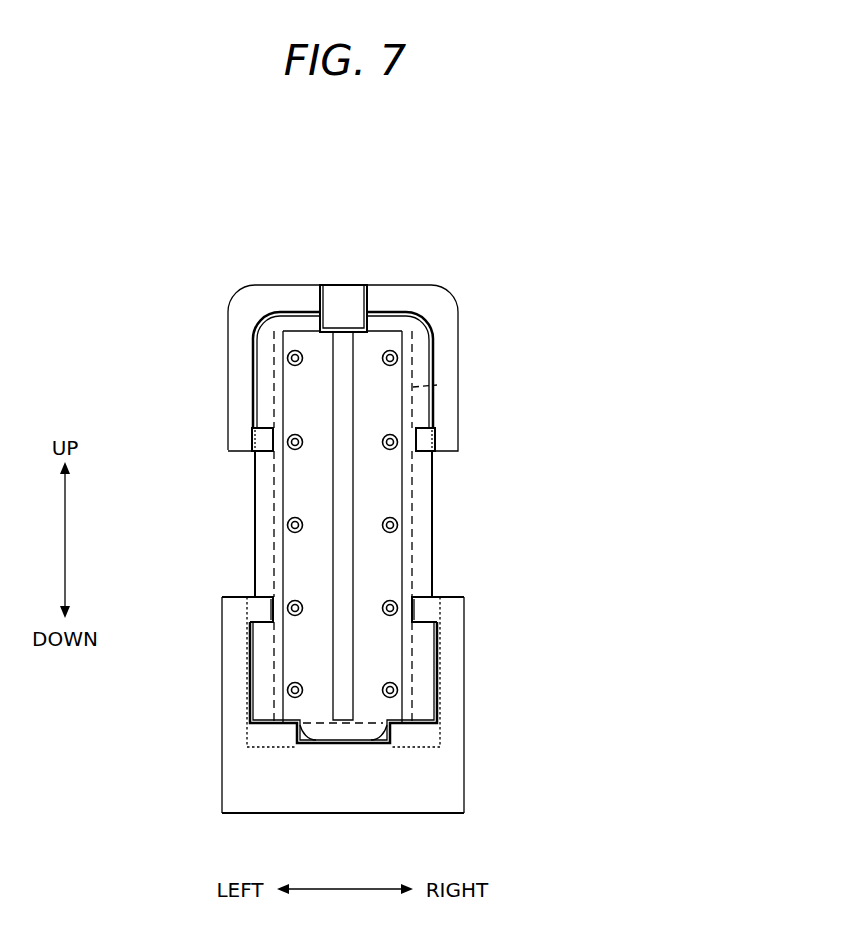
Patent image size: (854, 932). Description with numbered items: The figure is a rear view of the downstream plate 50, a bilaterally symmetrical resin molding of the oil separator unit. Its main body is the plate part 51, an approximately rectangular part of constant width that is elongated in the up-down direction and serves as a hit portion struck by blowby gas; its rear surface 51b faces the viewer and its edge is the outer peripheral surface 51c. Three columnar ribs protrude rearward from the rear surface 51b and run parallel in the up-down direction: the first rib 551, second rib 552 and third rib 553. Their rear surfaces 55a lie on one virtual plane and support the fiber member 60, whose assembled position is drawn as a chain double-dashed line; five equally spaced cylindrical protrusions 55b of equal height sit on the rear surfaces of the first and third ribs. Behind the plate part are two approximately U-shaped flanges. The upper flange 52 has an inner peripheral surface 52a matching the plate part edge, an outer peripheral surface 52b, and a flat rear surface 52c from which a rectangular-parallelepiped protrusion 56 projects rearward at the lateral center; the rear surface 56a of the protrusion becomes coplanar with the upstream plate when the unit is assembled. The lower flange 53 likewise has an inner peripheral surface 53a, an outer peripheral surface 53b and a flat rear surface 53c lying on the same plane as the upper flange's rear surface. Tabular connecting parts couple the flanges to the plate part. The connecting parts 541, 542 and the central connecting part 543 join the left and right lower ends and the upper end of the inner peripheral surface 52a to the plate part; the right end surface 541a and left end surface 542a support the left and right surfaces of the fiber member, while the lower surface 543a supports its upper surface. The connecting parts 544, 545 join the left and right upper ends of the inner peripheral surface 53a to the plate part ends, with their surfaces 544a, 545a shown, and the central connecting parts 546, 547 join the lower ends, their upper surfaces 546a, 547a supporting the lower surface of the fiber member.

The downstream plate 50 is at (437, 267).
The plate part 51 is at (433, 465).
The rear surface of the plate part 51b is at (424, 670).
The outer peripheral surface of the plate part 51c is at (432, 363).
The upper flange 52 is at (458, 338).
The inner peripheral surface of the upper flange 52a is at (262, 357).
The outer peripheral surface of the upper flange 52b is at (227, 393).
The rear surface of the upper flange 52c is at (438, 307).
The lower flange 53 is at (447, 767).
The inner peripheral surface of the lower flange 53a is at (258, 685).
The outer peripheral surface of the lower flange 53b is at (222, 762).
The rear surface of the lower flange 53c is at (442, 790).
The connecting part 541 is at (253, 428).
The right end surface of the connecting part 541a is at (273, 440).
The connecting part 542 is at (425, 428).
The left end surface of the connecting part 542a is at (412, 443).
The central connecting part 543 is at (262, 287).
The lower surface of the central connecting part 543a is at (343, 335).
The connecting part 544 is at (258, 597).
The surface of the connecting part 544a is at (273, 607).
The connecting part 545 is at (427, 597).
The surface of the connecting part 545a is at (412, 607).
The central connecting part 546 is at (310, 747).
The upper surface of the central connecting part 546a is at (263, 722).
The central connecting part 547 is at (375, 747).
The upper surface of the central connecting part 547a is at (424, 718).
The first rib 551 is at (283, 480).
The second rib 552 is at (342, 493).
The third rib 553 is at (403, 480).
The rear surface of the rib 55a is at (292, 658).
The cylindrical protrusion 55b is at (288, 525).
The protrusion 56 is at (295, 331).
The rear surface of the protrusion 56a is at (343, 300).
The fiber member 60 is at (437, 385).